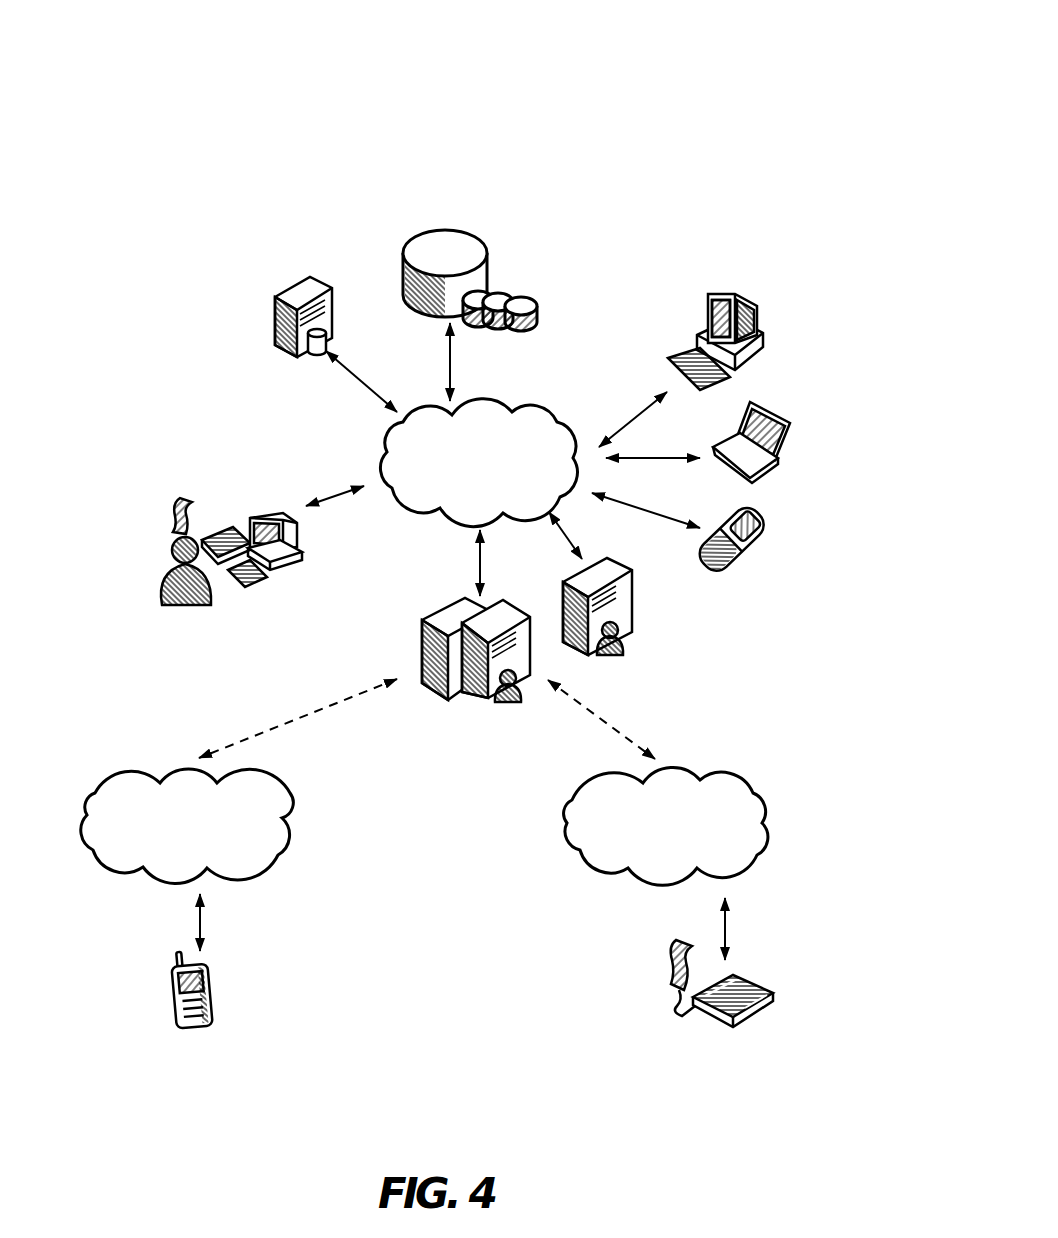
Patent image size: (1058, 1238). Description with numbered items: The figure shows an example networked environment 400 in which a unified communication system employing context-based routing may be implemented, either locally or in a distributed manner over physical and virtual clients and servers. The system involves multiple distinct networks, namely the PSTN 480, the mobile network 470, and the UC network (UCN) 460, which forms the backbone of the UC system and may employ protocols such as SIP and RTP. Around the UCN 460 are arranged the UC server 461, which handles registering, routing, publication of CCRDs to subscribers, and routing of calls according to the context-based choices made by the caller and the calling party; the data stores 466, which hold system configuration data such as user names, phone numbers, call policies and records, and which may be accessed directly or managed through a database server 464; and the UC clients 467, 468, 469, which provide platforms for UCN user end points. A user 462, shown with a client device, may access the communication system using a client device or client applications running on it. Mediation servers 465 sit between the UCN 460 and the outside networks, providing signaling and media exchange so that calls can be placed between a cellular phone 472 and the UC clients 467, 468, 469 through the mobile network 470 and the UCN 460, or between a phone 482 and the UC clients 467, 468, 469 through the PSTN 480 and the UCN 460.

The networked environment 400 is at (716, 66).
The UC network (UCN) 460 is at (488, 392).
The UC server 461 is at (634, 644).
The user 462 is at (172, 477).
The database server 464 is at (302, 362).
The mediation server 465 is at (463, 712).
The data stores 466 is at (459, 209).
The UC client 467 is at (757, 280).
The UC client 468 is at (789, 399).
The UC client 469 is at (760, 512).
The mobile network 470 is at (147, 886).
The cellular phone 472 is at (194, 1044).
The PSTN 480 is at (632, 886).
The phone 482 is at (745, 1044).